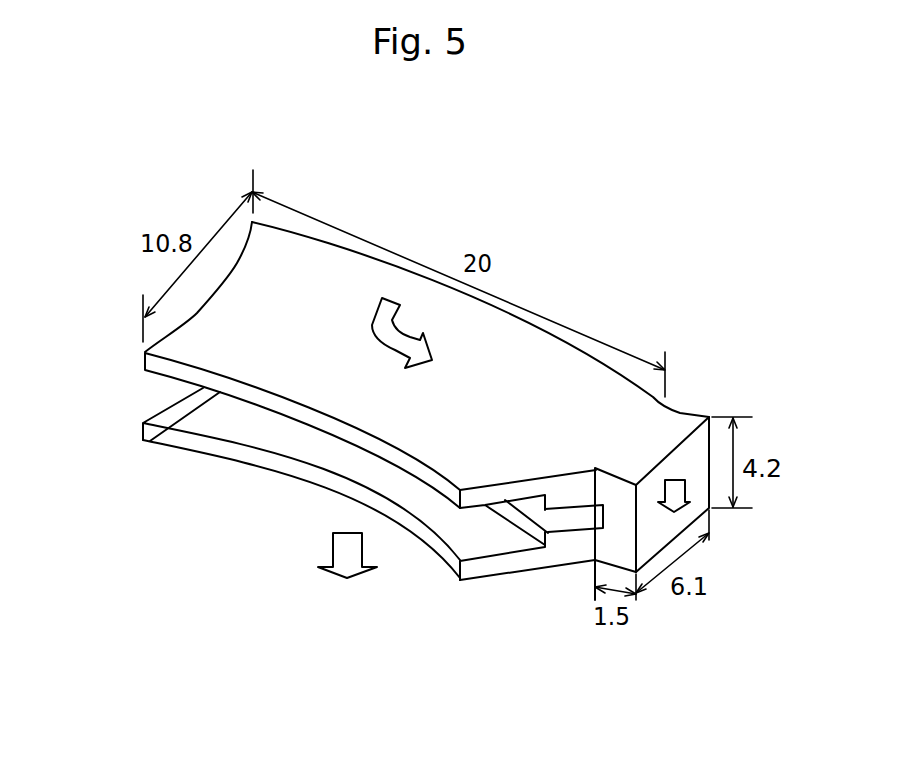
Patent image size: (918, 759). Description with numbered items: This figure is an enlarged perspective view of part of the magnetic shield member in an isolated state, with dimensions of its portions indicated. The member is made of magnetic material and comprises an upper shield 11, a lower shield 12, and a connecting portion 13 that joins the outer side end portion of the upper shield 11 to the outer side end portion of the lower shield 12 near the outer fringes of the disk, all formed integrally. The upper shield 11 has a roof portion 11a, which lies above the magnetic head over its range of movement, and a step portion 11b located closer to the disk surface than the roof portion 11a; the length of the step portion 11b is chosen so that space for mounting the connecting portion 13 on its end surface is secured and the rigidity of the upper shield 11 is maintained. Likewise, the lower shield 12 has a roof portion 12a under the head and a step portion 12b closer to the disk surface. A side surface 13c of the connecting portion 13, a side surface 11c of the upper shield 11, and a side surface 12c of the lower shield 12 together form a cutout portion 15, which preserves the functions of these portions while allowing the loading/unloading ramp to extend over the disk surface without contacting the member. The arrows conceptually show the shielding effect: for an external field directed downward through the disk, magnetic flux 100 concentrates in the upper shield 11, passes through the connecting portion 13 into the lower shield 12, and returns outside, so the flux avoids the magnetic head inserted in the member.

The upper shield 11 is at (227, 333).
The roof portion 11a is at (150, 441).
The step portion 11b is at (530, 497).
The side surface 11c is at (566, 493).
The lower shield 12 is at (203, 459).
The roof portion 12a is at (289, 486).
The step portion 12b is at (537, 529).
The side surface 12c is at (574, 548).
The connecting portion 13 is at (682, 420).
The side surface 13c is at (618, 490).
The cutout portion 15 is at (510, 488).
The magnetic flux 100 is at (372, 328).